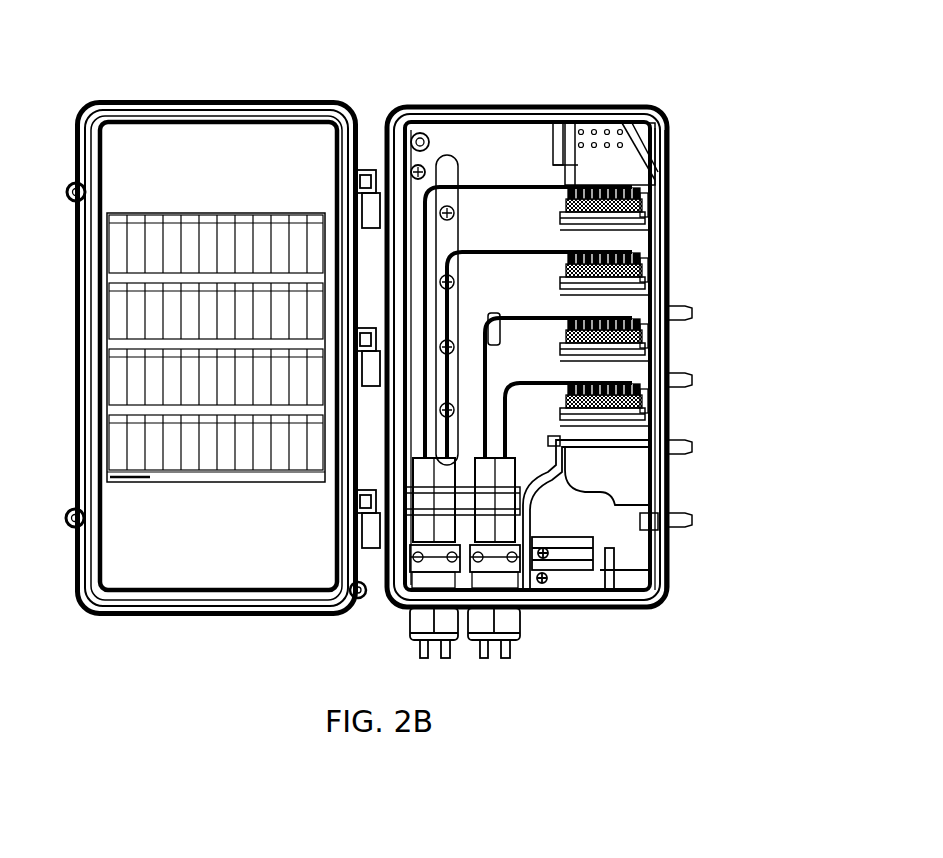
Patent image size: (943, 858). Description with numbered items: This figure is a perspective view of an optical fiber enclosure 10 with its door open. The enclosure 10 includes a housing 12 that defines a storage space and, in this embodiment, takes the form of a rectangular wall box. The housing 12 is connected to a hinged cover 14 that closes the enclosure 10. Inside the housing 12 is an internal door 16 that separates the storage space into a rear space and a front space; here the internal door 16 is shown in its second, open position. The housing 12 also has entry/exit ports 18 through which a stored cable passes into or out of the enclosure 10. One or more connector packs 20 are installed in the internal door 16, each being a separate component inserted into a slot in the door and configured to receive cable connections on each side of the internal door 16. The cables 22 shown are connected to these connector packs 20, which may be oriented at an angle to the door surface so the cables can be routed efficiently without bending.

The enclosure 10 is at (230, 68).
The housing 12 is at (668, 272).
The hinged cover 14 is at (244, 550).
The internal door 16 is at (623, 172).
The entry/exit ports 18 is at (520, 617).
The connector packs 20 is at (623, 215).
The cables 22 is at (485, 187).